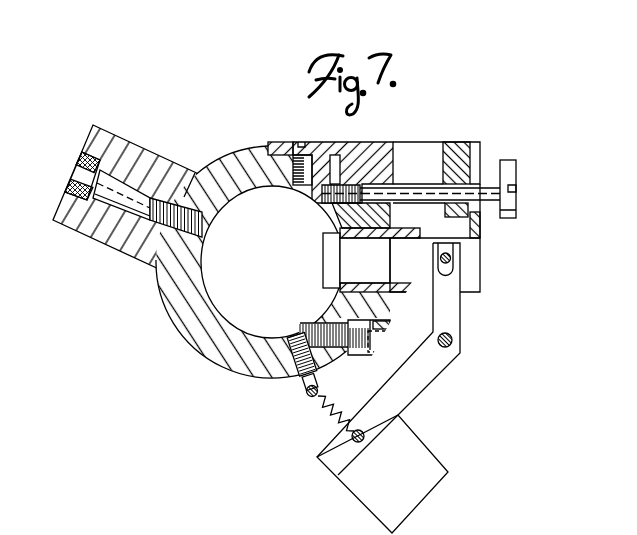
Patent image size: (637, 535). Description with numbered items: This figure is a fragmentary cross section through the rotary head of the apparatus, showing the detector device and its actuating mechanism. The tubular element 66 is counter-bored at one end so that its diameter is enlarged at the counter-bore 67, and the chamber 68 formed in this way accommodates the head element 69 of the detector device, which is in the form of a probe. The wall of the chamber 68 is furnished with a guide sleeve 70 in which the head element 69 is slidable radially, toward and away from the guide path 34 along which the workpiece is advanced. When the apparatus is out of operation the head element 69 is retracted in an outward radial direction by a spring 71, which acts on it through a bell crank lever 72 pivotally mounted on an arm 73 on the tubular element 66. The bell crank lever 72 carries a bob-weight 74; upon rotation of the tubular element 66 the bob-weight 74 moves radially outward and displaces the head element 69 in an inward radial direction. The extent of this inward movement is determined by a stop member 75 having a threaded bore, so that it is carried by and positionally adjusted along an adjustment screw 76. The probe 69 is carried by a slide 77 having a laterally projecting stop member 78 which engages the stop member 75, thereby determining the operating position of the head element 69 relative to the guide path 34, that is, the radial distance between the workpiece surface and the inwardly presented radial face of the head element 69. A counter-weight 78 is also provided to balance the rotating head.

The guide path 34 is at (212, 282).
The tubular element 66 is at (248, 141).
The counter-bore 67 is at (196, 337).
The chamber 68 is at (203, 254).
The head element 69 is at (323, 268).
The guide sleeve 70 is at (430, 227).
The spring 71 is at (322, 404).
The bell crank lever 72 is at (448, 362).
The arm 73 is at (398, 345).
The bob-weight 74 is at (429, 452).
The stop member 75 is at (450, 150).
The adjustment screw 76 is at (516, 201).
The slide 77 is at (470, 262).
The stop member 78 is at (145, 150).